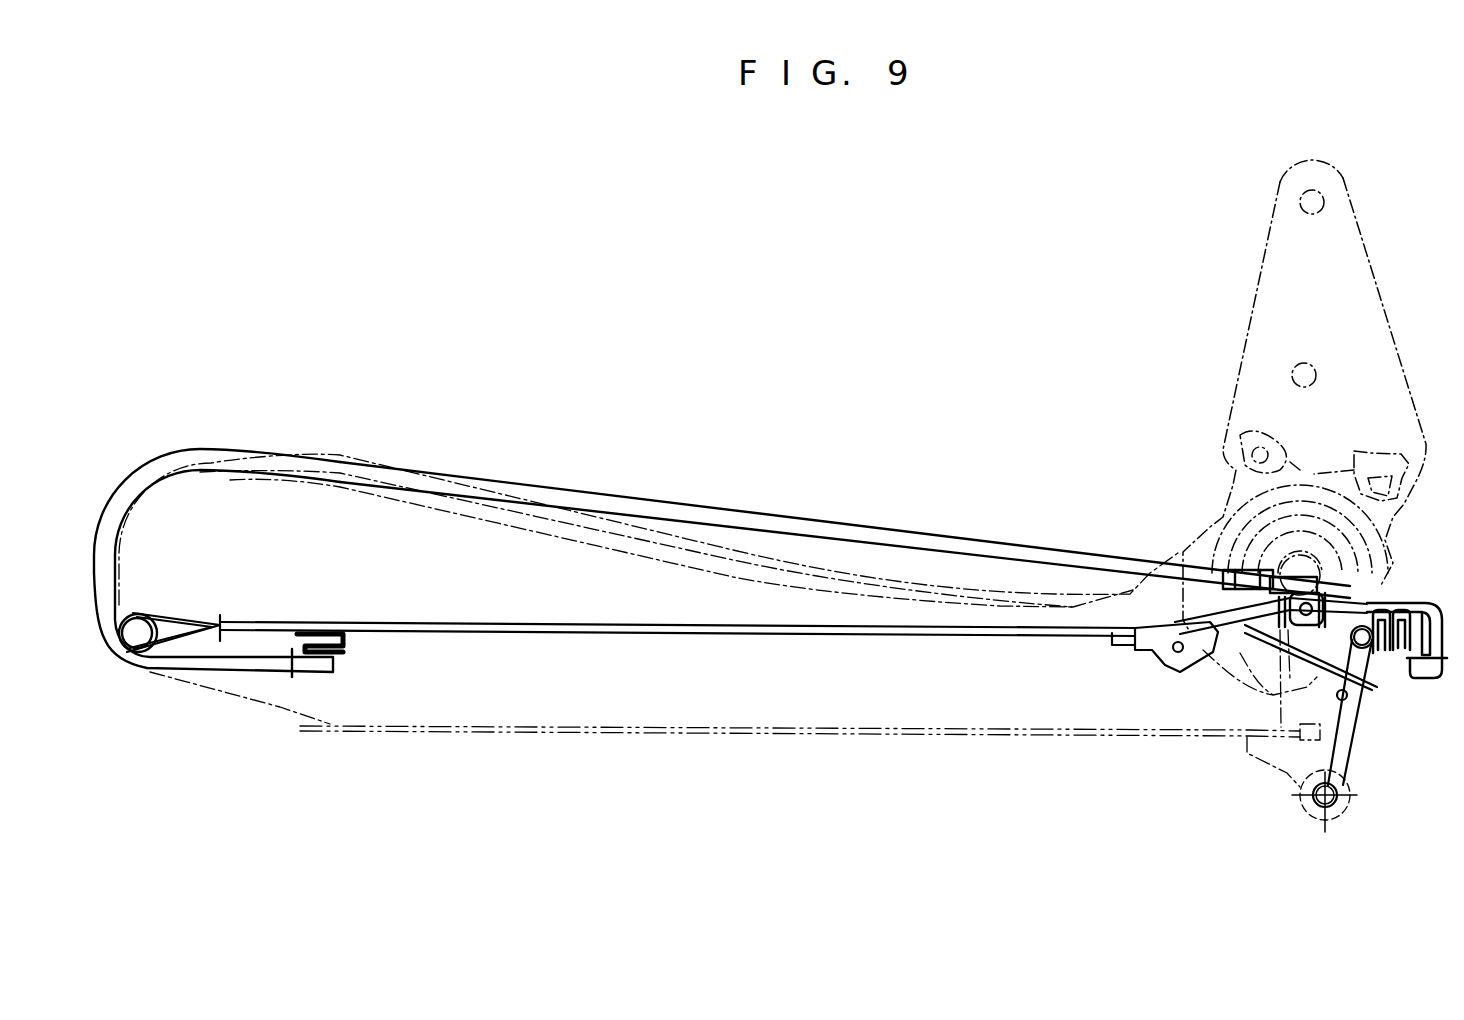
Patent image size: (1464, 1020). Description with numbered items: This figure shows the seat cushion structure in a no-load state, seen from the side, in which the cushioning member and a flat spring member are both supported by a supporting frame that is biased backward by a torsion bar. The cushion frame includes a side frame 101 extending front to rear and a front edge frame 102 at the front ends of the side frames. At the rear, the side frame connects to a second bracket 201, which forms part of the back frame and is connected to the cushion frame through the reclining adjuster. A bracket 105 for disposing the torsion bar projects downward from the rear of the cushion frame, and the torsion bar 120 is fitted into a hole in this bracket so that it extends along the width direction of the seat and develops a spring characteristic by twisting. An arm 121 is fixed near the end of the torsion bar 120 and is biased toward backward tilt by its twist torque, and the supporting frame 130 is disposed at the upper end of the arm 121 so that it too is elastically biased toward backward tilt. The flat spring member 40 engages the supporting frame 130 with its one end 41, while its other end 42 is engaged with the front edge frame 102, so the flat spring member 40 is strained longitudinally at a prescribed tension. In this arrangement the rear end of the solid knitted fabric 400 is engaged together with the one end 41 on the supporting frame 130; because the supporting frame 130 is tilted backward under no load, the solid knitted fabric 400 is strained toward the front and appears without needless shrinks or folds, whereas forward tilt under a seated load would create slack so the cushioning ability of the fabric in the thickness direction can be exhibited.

The flat spring member 40 is at (500, 633).
The one end of the flat spring member 41 is at (1375, 597).
The other end of the flat spring member 42 is at (180, 617).
The side frame 101 is at (373, 455).
The front edge frame 102 is at (140, 612).
The bracket for disposing the torsion bar 105 is at (1360, 795).
The torsion bar 120 is at (1313, 800).
The arm 121 is at (1340, 720).
The supporting frame 130 is at (1360, 645).
The second bracket 201 is at (1257, 280).
The solid knitted fabric 400 is at (850, 530).